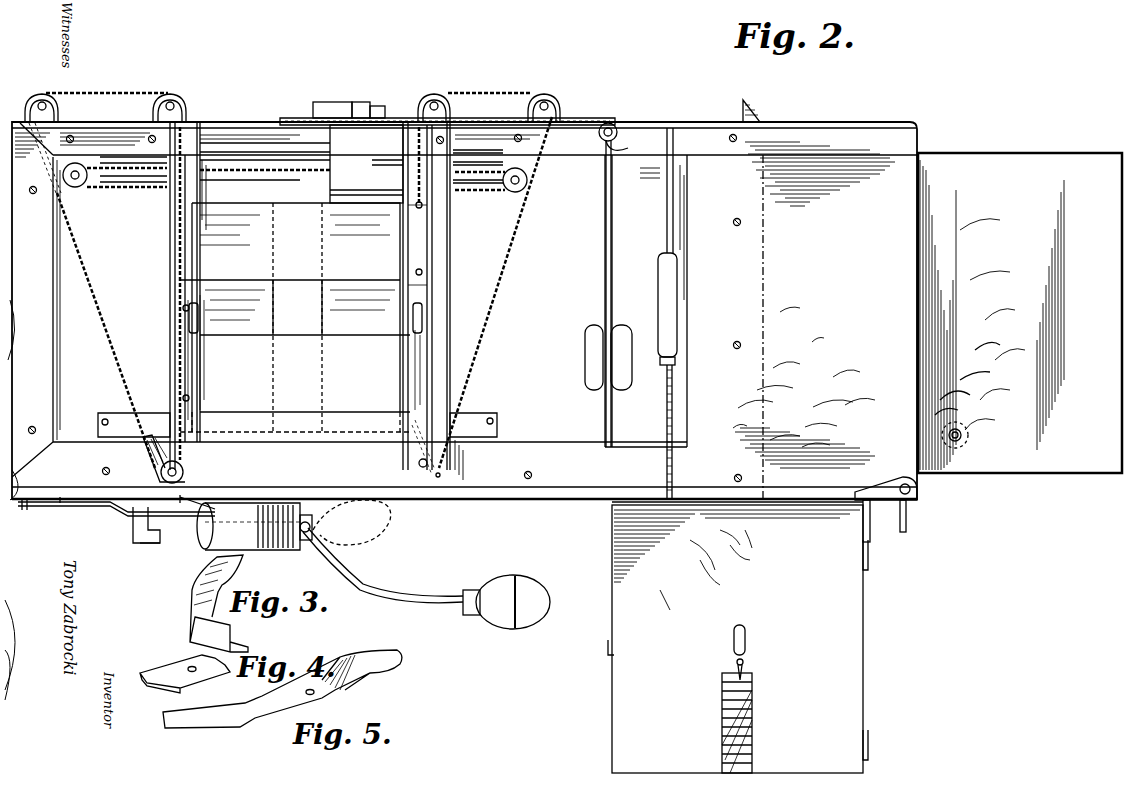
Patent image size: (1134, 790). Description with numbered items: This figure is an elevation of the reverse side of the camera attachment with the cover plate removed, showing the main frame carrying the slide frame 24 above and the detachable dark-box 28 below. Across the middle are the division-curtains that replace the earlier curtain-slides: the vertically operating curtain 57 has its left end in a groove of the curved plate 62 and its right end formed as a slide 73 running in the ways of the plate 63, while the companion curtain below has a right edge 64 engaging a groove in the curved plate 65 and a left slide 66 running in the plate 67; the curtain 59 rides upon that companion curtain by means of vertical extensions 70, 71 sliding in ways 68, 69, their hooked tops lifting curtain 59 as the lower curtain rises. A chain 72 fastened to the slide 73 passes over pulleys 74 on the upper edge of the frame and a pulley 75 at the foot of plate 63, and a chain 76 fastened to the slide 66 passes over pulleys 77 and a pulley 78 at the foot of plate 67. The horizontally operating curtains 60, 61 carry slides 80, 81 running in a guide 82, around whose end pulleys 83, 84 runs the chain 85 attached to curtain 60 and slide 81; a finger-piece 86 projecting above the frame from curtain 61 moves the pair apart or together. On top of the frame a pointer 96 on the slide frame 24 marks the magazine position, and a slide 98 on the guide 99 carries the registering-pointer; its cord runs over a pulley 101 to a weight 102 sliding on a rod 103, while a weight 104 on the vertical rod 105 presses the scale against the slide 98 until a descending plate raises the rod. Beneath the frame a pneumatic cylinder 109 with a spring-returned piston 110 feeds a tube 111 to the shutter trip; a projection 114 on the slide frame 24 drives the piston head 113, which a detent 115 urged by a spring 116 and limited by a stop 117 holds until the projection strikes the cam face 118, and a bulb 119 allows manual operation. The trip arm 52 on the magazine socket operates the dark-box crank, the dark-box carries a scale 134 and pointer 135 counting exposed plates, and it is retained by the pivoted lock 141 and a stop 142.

In FIG. 2, the slide frame 24 is at (1008, 152).
In FIG. 2, the dark-box 28 is at (863, 597).
In FIG. 2, the trip arm 52 is at (907, 517).
In FIG. 2, the division-curtain 57 is at (236, 258).
In FIG. 2, the division-curtain 59 is at (294, 418).
In FIG. 2, the division-curtain 60 is at (272, 312).
In FIG. 2, the division-curtain 61 is at (322, 322).
In FIG. 2, the curved plate 62 is at (200, 128).
In FIG. 2, the plate 63 is at (400, 122).
In FIG. 2, the right edge of curtain 58 64 is at (428, 383).
In FIG. 2, the curved plate 65 is at (432, 262).
In FIG. 2, the slide 66 is at (182, 352).
In FIG. 2, the plate 67 is at (172, 252).
In FIG. 2, the way 68 is at (198, 322).
In FIG. 2, the way 69 is at (412, 320).
In FIG. 2, the vertical extension 70 is at (200, 368).
In FIG. 2, the vertical extension 71 is at (410, 368).
In FIG. 2, the chain 72 is at (498, 93).
In FIG. 2, the slide 73 is at (408, 245).
In FIG. 2, the pulleys 74 is at (435, 94).
In FIG. 2, the pulley 75 is at (415, 465).
In FIG. 2, the chain 76 is at (112, 92).
In FIG. 2, the pulleys 77 is at (42, 94).
In FIG. 2, the pulley 78 is at (160, 476).
In FIG. 2, the slide 80 is at (240, 168).
In FIG. 2, the slide 81 is at (388, 165).
In FIG. 2, the guide 82 is at (115, 166).
In FIG. 2, the pulley 83 is at (77, 187).
In FIG. 2, the pulley 84 is at (529, 181).
In FIG. 2, the chain 85 is at (137, 191).
In FIG. 2, the finger-piece 86 is at (360, 102).
In FIG. 2, the pointer 96 is at (756, 110).
In FIG. 2, the slide 98 is at (335, 102).
In FIG. 2, the guide 99 is at (300, 116).
In FIG. 2, the pulley 101 is at (612, 124).
In FIG. 2, the weight 102 is at (590, 366).
In FIG. 2, the rod 103 is at (606, 252).
In FIG. 2, the weight 104 is at (658, 293).
In FIG. 2, the vertical rod 105 is at (667, 212).
In FIG. 2, the pneumatic cylinder 109 is at (232, 524).
In FIG. 2, the piston 110 is at (272, 550).
In FIG. 2, the tube 111 is at (312, 527).
In FIG. 2, the head 113 is at (140, 535).
In FIG. 2, the projection 114 is at (155, 545).
In FIG. 3, the projection 114 is at (200, 638).
In FIG. 2, the detent 115 is at (84, 508).
In FIG. 5, the detent 115 is at (300, 705).
In FIG. 2, the spring 116 is at (195, 500).
In FIG. 2, the stop 117 is at (25, 510).
In FIG. 4, the stop 117 is at (148, 684).
In FIG. 5, the cam face 118 is at (205, 725).
In FIG. 2, the bulb 119 is at (512, 628).
In FIG. 2, the scale 134 is at (728, 740).
In FIG. 2, the pointer 135 is at (750, 664).
In FIG. 2, the lock 141 is at (888, 483).
In FIG. 2, the stop 142 is at (612, 512).